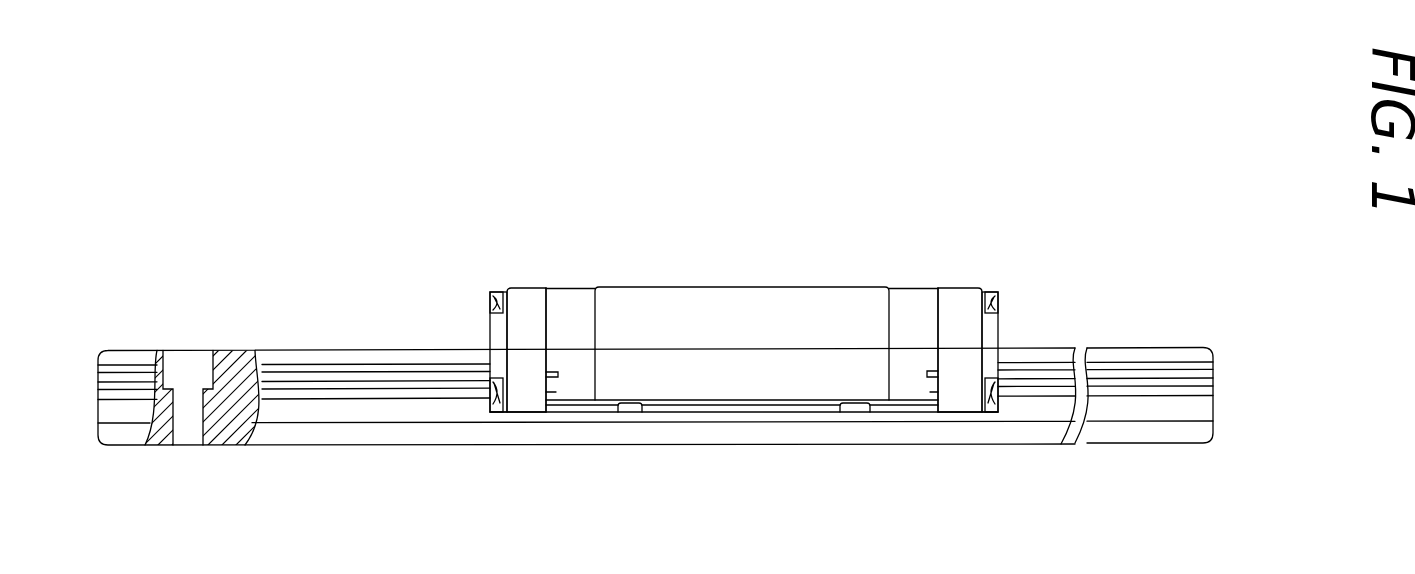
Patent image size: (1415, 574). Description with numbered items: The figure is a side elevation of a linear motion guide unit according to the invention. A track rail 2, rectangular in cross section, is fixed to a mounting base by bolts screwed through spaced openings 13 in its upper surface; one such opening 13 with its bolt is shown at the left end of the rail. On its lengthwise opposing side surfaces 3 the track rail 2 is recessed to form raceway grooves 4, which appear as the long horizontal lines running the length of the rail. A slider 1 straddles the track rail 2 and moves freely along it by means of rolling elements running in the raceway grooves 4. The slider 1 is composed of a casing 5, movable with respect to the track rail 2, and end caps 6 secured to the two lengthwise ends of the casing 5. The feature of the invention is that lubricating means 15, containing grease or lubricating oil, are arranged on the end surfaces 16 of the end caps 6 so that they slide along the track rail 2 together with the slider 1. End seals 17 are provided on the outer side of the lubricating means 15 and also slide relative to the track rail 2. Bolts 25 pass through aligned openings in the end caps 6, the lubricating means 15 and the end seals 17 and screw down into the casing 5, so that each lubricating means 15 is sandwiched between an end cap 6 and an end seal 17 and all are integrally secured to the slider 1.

The slider 1 is at (740, 349).
The track rail 2 is at (307, 356).
The side surfaces 3 is at (346, 414).
The raceway grooves 4 is at (365, 376).
The casing 5 is at (726, 308).
The end caps 6 is at (570, 315).
The openings 13 is at (197, 418).
The lubricating means 15 is at (527, 396).
The end surfaces 16 is at (546, 330).
The end seals 17 is at (497, 333).
The bolts 25 is at (496, 292).